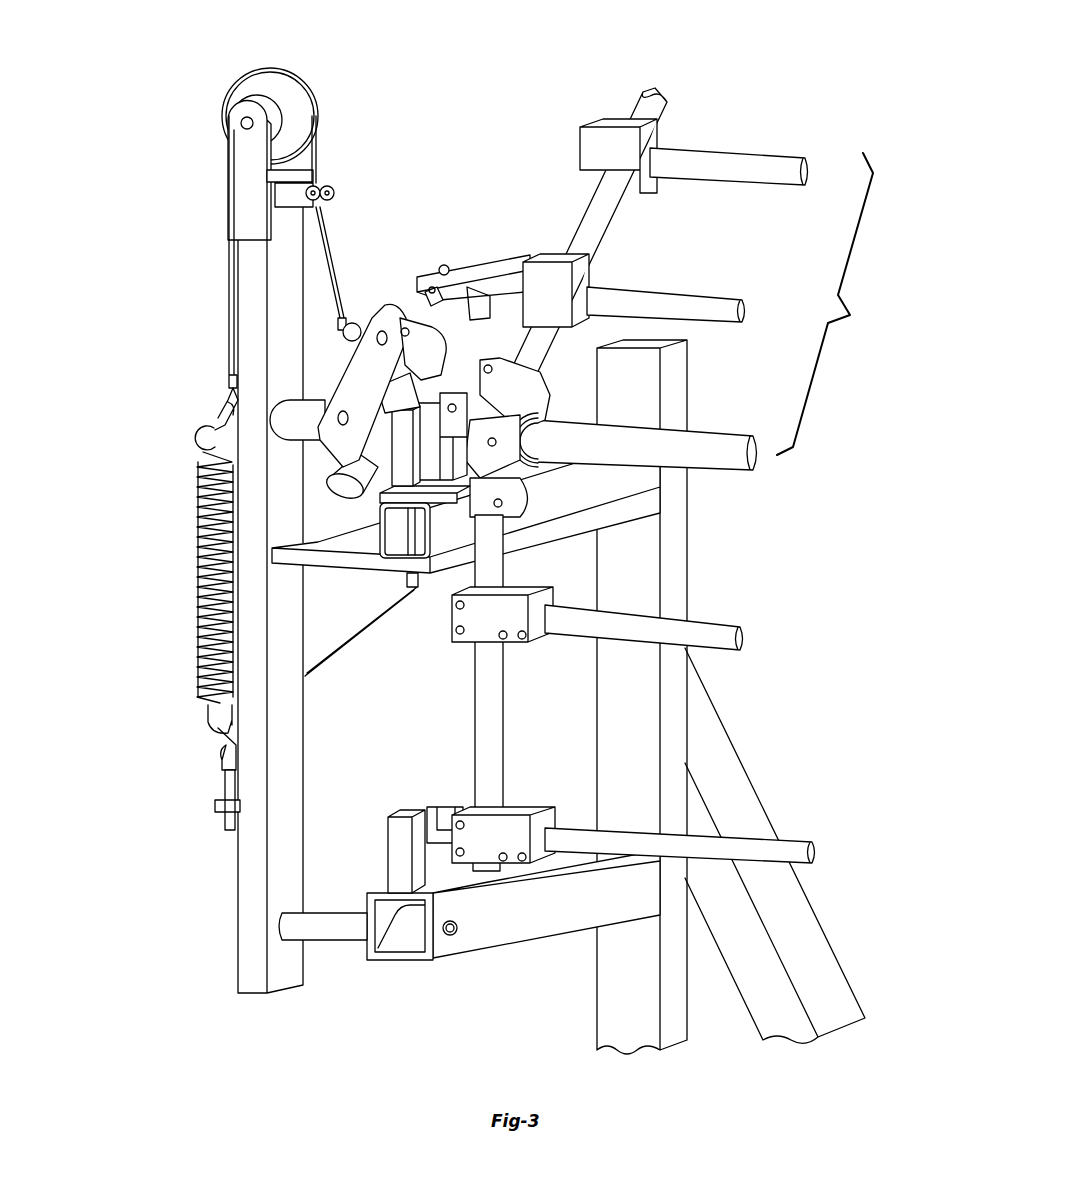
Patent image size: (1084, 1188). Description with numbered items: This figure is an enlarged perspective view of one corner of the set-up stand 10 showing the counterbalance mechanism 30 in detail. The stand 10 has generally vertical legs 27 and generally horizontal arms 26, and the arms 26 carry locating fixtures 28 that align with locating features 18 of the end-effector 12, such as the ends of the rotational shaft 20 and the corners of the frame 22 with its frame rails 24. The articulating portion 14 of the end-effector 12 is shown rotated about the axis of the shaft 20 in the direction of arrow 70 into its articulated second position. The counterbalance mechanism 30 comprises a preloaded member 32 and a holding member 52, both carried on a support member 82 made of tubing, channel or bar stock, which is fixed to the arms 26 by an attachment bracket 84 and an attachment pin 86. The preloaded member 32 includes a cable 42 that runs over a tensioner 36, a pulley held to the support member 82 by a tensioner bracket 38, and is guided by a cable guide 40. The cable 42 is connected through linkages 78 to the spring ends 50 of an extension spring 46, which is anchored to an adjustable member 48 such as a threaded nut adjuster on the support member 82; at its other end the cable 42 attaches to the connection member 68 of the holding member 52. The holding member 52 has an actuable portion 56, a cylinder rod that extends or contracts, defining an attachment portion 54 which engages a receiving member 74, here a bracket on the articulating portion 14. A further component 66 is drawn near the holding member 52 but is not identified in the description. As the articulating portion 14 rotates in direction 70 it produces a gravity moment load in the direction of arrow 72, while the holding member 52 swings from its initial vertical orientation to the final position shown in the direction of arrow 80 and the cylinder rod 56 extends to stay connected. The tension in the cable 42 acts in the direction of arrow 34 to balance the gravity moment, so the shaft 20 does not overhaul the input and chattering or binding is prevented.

The set-up stand 10 is at (835, 932).
The end-effector 12 is at (588, 217).
The articulating portion 14 is at (827, 304).
The locating features 18 is at (433, 392).
The rotational shaft 20 is at (693, 463).
The frame 22 is at (600, 212).
The frame rails 24 is at (712, 162).
The arms 26 is at (538, 515).
The legs 27 is at (681, 988).
The locating fixtures 28 is at (397, 853).
The counterbalance mechanism 30 is at (200, 278).
The preloaded member 32 is at (203, 95).
The arrow indicating counterbalance load direction 34 is at (338, 222).
The tensioner 36 is at (310, 87).
The tensioner bracket 38 is at (237, 197).
The cable guide 40 is at (320, 183).
The cable 42 is at (317, 220).
The spring 46 is at (200, 600).
The adjustable member 48 is at (215, 805).
The spring ends 50 is at (200, 440).
The holding member 52 is at (400, 298).
The attachment portion 54 is at (444, 266).
The actuable portion 56 is at (436, 303).
The cylinder 66 is at (302, 425).
The connection member 68 is at (355, 322).
The arrow indicating rotation direction 70 is at (760, 427).
The arrow indicating gravity moment load direction 72 is at (760, 238).
The receiving member 74 is at (478, 278).
The linkages 78 is at (222, 415).
The arrow indicating holding member movement direction 80 is at (325, 378).
The support member 82 is at (290, 713).
The attachment bracket 84 is at (360, 623).
The attachment pin 86 is at (345, 942).